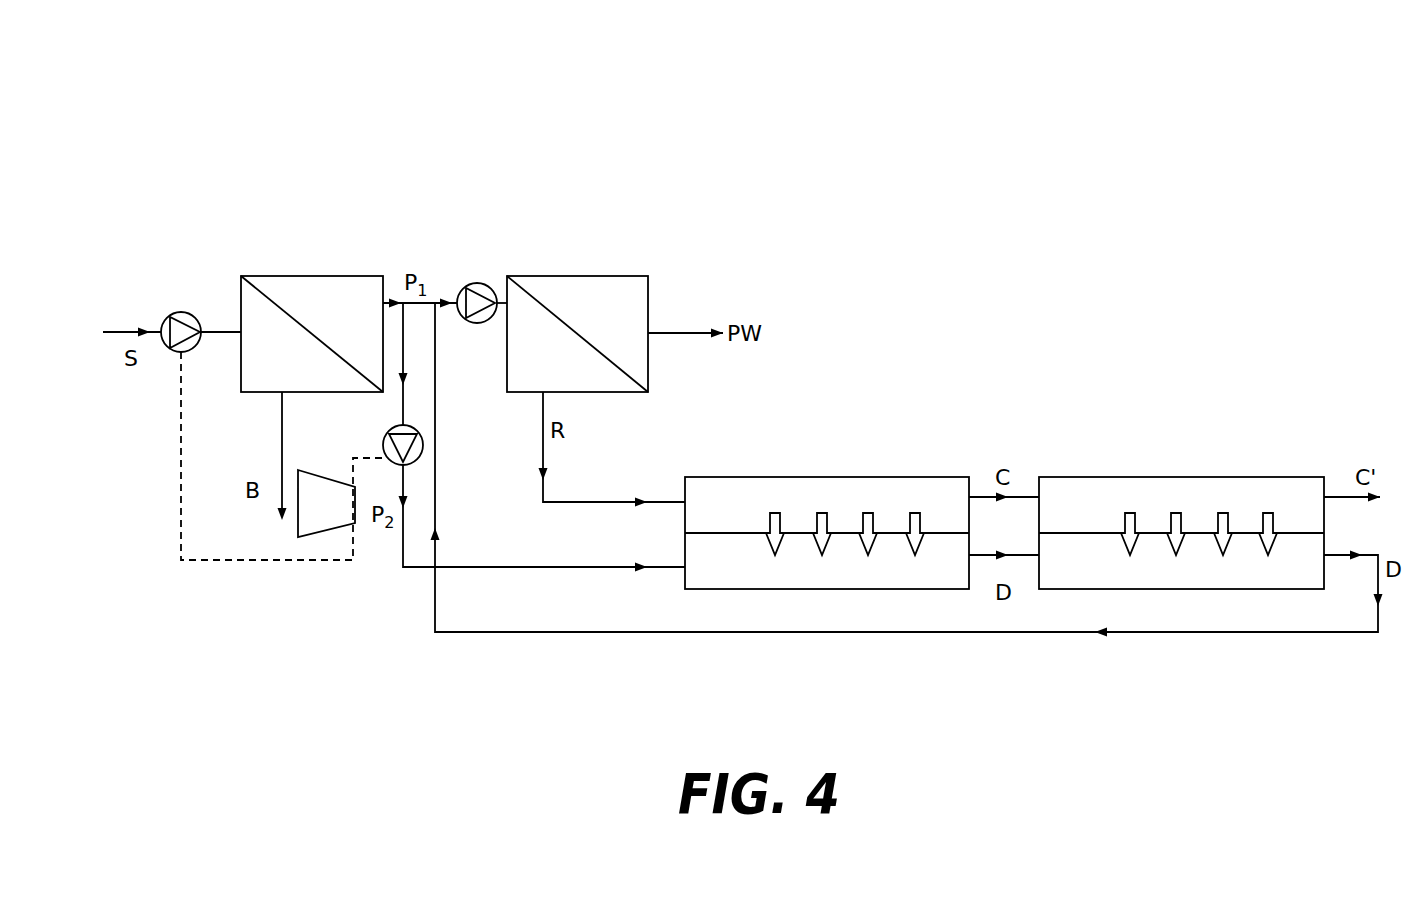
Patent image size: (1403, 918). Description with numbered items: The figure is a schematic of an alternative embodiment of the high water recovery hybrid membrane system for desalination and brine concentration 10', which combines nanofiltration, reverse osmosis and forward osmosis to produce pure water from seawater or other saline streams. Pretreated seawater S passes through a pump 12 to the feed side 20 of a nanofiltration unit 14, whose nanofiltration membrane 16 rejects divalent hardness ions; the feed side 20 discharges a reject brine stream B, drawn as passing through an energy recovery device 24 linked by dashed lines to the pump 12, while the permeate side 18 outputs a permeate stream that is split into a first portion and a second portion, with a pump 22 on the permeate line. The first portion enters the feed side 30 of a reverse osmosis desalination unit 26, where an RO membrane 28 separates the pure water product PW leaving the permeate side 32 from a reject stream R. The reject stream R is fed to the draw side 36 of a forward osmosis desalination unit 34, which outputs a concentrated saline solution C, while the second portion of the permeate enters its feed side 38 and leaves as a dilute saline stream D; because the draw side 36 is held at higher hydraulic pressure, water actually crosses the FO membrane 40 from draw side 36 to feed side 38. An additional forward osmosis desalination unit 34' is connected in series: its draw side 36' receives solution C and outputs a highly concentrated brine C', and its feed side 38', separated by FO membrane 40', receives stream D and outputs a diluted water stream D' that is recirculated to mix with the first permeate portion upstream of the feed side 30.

The high water recovery hybrid membrane system for desalination and brine concentrat 10' is at (1239, 121).
The pump 12 is at (188, 312).
The nanofiltration unit 14 is at (294, 313).
The nanofiltration membrane 16 is at (325, 344).
The permeate side 18 is at (308, 290).
The feed side 20 is at (254, 365).
The pump 22 is at (383, 447).
The energy recovery turbine 24 is at (310, 538).
The reverse osmosis desalination unit 26 is at (594, 312).
The reverse osmosis membrane 28 is at (589, 343).
The feed side 30 is at (518, 362).
The permeate side 32 is at (636, 318).
The forward osmosis desalination unit 34 is at (719, 446).
The additional forward osmosis desalination unit 34' is at (1194, 533).
The draw side 36 is at (777, 441).
The draw side 36' is at (1130, 441).
The feed side 38 is at (785, 633).
The feed side 38' is at (1146, 633).
The forward osmosis membrane 40 is at (833, 477).
The forward osmosis membrane 40' is at (1194, 477).